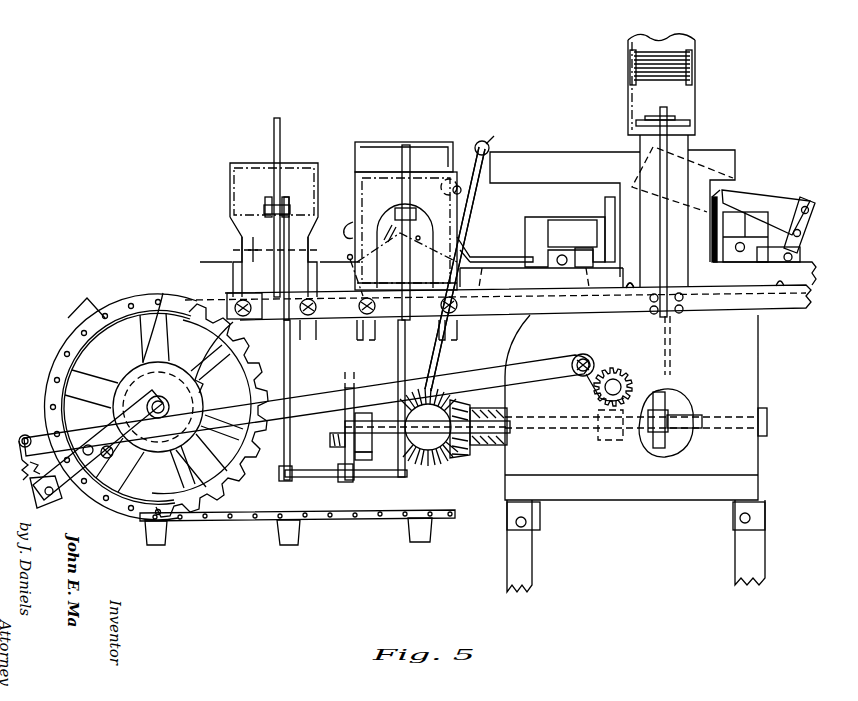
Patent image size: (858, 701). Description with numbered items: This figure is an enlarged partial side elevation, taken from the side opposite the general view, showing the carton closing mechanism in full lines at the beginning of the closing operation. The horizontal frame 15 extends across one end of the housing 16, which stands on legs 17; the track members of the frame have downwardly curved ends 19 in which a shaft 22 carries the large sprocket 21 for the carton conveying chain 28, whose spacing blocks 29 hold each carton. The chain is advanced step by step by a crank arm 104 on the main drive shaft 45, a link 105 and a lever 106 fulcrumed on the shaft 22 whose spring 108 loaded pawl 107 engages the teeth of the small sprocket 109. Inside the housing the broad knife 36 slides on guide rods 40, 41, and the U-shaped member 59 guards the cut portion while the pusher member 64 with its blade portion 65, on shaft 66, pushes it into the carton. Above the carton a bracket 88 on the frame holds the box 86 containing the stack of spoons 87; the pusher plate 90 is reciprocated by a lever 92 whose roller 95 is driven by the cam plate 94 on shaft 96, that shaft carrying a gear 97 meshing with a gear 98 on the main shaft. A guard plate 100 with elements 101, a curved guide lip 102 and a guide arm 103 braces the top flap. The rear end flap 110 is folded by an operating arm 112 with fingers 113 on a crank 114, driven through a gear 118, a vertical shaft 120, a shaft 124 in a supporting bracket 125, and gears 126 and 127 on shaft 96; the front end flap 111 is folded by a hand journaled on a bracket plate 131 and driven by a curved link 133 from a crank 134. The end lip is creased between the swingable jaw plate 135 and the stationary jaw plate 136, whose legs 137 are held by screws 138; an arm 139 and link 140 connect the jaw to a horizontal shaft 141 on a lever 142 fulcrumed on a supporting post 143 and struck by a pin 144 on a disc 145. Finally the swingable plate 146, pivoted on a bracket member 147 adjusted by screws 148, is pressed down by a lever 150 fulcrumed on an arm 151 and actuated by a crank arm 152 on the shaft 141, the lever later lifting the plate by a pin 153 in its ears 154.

The horizontal frame 15 is at (760, 318).
The housing 16 is at (636, 407).
The legs 17 is at (745, 540).
The downwardly curved ends 19 is at (185, 330).
The sprocket 21 is at (120, 322).
The shaft 22 is at (155, 400).
The carton conveying chain 28 is at (238, 522).
The cross members or spacing blocks 29 is at (168, 540).
The broad knife 36 is at (605, 218).
The guide rod 40 is at (562, 266).
The guide rod 41 is at (742, 252).
The drive shaft 45 is at (618, 380).
The U-shaped member 59 is at (596, 247).
The pusher member or arm 64 is at (780, 197).
The blade portion 65 is at (722, 195).
The shaft 66 is at (803, 247).
The box or holder 86 is at (695, 72).
The stack of spoons 87 is at (695, 52).
The bracket 88 is at (688, 137).
The pusher plate 90 is at (688, 118).
The lever 92 is at (660, 212).
The cam plate 94 is at (680, 445).
The roller 95 is at (650, 442).
The shaft 96 is at (685, 415).
The gear 97 is at (598, 440).
The gear 98 is at (598, 398).
The guard plate 100 is at (730, 150).
The elements 101 is at (632, 282).
The curved guide lip 102 is at (737, 178).
The guide arm 103 is at (590, 160).
The crank arm 104 is at (598, 360).
The link 105 is at (480, 384).
The lever 106 is at (72, 497).
The pawl 107 is at (28, 440).
The spring 108 is at (30, 468).
The small sprocket 109 is at (114, 400).
The rear end flap 110 is at (418, 246).
The front end flap 111 is at (390, 244).
The operating arm 112 is at (480, 142).
The fingers 113 is at (492, 140).
The crank 114 is at (465, 178).
The gear 118 is at (460, 195).
The vertical shaft 120 is at (438, 345).
The shaft 124 is at (428, 452).
The supporting bracket 125 is at (337, 228).
The gear 126 is at (440, 462).
The gear 127 is at (462, 456).
The bracket plate 131 is at (343, 268).
The curved link 133 is at (857, 376).
The crank 134 is at (845, 403).
The swingable jaw plate 135 is at (360, 155).
The stationary jaw plate 136 is at (355, 185).
The legs 137 is at (385, 280).
The screws 138 is at (368, 338).
The arm 139 is at (402, 192).
The link 140 is at (398, 378).
The horizontal shaft 141 is at (384, 477).
The lever 142 is at (336, 447).
The supporting post 143 is at (372, 426).
The pin 144 is at (344, 444).
The disc 145 is at (366, 457).
The swingable plate 146 is at (238, 165).
The bracket member 147 is at (230, 300).
The screws 148 is at (310, 330).
The lever 150 is at (274, 132).
The arm 151 is at (262, 222).
The crank arm 152 is at (290, 378).
The pin 153 is at (289, 200).
The ears 154 is at (268, 198).